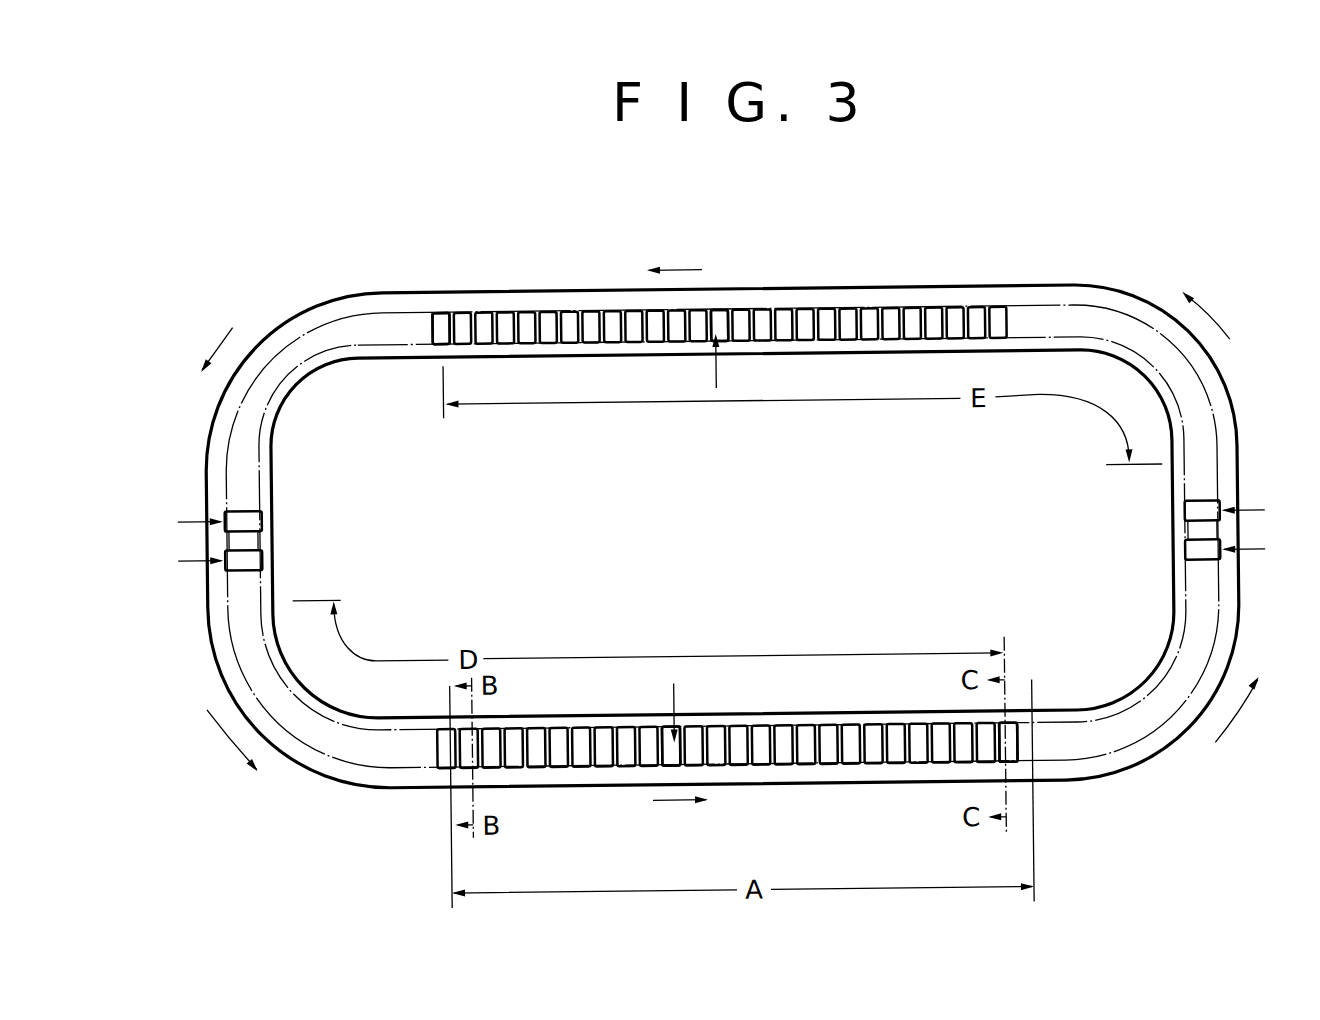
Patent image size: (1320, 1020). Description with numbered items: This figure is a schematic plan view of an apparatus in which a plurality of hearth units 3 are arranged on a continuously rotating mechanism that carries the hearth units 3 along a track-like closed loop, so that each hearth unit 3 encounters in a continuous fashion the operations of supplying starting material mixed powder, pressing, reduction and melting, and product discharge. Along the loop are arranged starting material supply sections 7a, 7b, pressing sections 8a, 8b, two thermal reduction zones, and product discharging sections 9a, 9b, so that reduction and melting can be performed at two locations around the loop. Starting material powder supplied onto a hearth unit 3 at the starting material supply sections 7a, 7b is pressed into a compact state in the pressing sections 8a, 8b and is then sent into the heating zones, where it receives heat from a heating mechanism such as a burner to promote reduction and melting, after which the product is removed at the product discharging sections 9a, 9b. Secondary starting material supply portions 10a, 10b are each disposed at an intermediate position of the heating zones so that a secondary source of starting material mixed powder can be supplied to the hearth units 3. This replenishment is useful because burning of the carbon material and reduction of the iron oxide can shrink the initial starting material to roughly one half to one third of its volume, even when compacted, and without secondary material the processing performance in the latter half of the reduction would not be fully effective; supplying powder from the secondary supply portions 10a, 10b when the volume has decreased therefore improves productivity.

The hearth unit 3 is at (508, 314).
The starting material supply section 7a is at (225, 509).
The starting material supply section 7b is at (1220, 556).
The pressing section 8a is at (226, 561).
The pressing section 8b is at (1220, 512).
The product discharging section 9a is at (1015, 753).
The product discharging section 9b is at (441, 314).
The secondary starting material supply portion 10a is at (671, 722).
The secondary starting material supply portion 10b is at (717, 346).